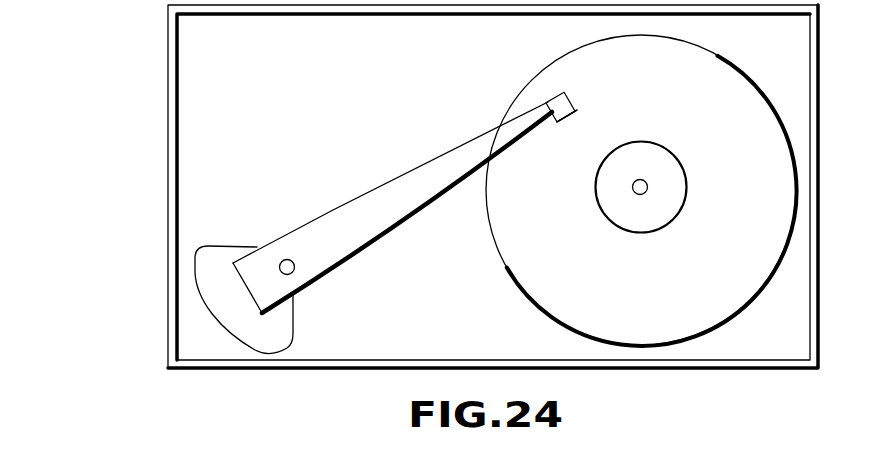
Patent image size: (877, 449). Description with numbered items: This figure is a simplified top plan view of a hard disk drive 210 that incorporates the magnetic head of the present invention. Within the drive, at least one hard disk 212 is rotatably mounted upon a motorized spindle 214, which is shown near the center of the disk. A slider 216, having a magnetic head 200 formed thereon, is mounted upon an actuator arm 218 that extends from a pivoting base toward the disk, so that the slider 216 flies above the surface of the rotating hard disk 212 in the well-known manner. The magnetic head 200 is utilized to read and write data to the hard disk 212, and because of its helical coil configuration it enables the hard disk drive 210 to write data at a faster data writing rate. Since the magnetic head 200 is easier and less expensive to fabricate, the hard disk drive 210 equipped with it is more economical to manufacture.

The hard disk drive 210 is at (128, 62).
The hard disk 212 is at (533, 265).
The motorized spindle 214 is at (679, 181).
The slider 216 is at (578, 124).
The magnetic head 200 is at (570, 96).
The actuator arm 218 is at (367, 191).